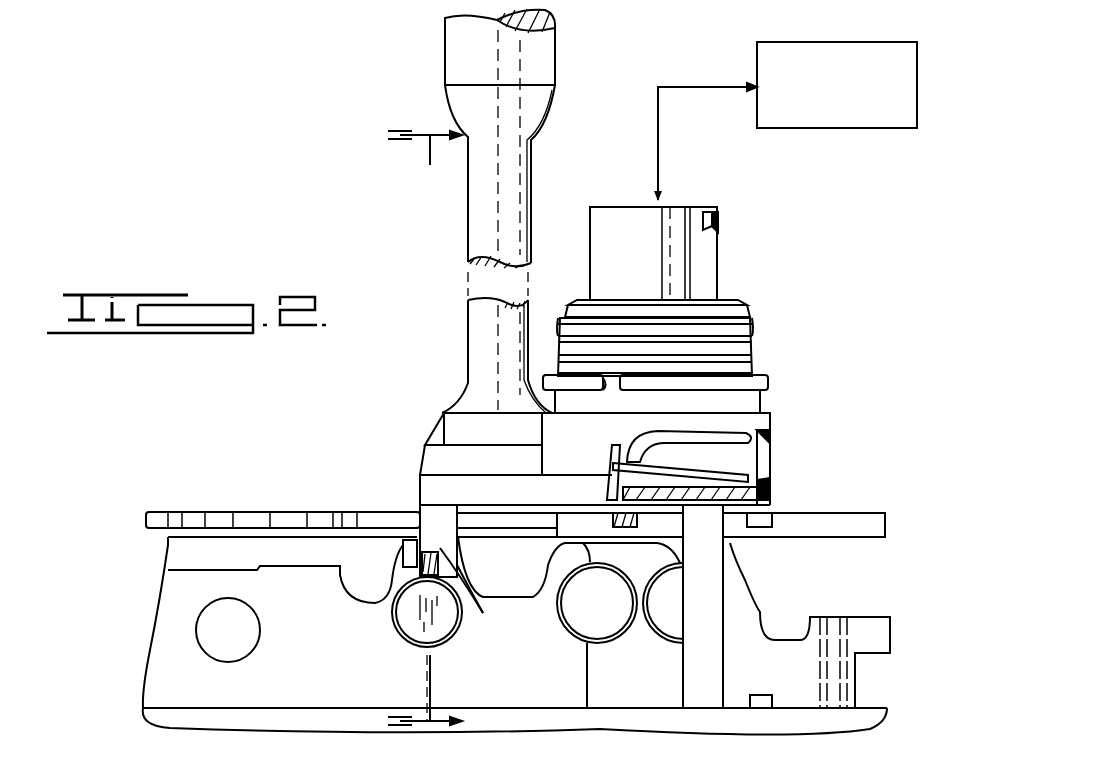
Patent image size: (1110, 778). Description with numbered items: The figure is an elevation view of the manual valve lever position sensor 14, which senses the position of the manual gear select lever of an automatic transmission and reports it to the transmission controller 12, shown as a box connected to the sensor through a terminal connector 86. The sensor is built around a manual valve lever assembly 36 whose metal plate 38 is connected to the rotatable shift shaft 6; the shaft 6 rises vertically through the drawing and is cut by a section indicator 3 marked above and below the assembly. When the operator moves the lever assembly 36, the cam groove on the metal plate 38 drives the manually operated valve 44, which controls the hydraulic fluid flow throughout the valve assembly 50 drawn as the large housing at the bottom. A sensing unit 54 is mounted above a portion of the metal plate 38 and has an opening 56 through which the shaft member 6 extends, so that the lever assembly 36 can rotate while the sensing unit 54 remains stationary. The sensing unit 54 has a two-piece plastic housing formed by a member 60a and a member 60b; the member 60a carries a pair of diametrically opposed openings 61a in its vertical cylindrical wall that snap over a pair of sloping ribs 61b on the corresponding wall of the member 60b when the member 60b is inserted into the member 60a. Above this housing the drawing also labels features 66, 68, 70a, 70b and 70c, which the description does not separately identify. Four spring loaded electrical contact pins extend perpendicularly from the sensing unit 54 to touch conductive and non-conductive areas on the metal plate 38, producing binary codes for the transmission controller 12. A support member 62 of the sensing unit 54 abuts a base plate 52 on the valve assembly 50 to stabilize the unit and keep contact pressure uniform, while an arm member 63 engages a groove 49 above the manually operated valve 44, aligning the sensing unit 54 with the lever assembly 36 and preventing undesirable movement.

The transmission controller 12 is at (816, 44).
The shift shaft 6 is at (470, 196).
The section line 3- 3 is at (425, 436).
The manual valve lever position sensor 14 is at (780, 238).
The terminal connector 86 is at (718, 212).
The upper flange 66 is at (740, 317).
The threaded body 68 is at (742, 327).
The first thread ring 70a is at (757, 332).
The second thread ring 70b is at (757, 350).
The third thread ring 70c is at (757, 368).
The housing member 60b is at (760, 405).
The sensing unit 54 is at (775, 433).
The housing member 60a is at (765, 456).
The openings 61a is at (612, 462).
The sloping ribs 61b is at (612, 450).
The opening 56 is at (440, 436).
The manual valve lever assembly 36 is at (491, 519).
The metal plate 38 is at (242, 512).
The valve assembly 50 is at (150, 656).
The groove 49 is at (421, 574).
The manually operated valve 44 is at (410, 643).
The arm member 63 is at (469, 597).
The base plate 52 is at (620, 708).
The support member 62 is at (713, 663).